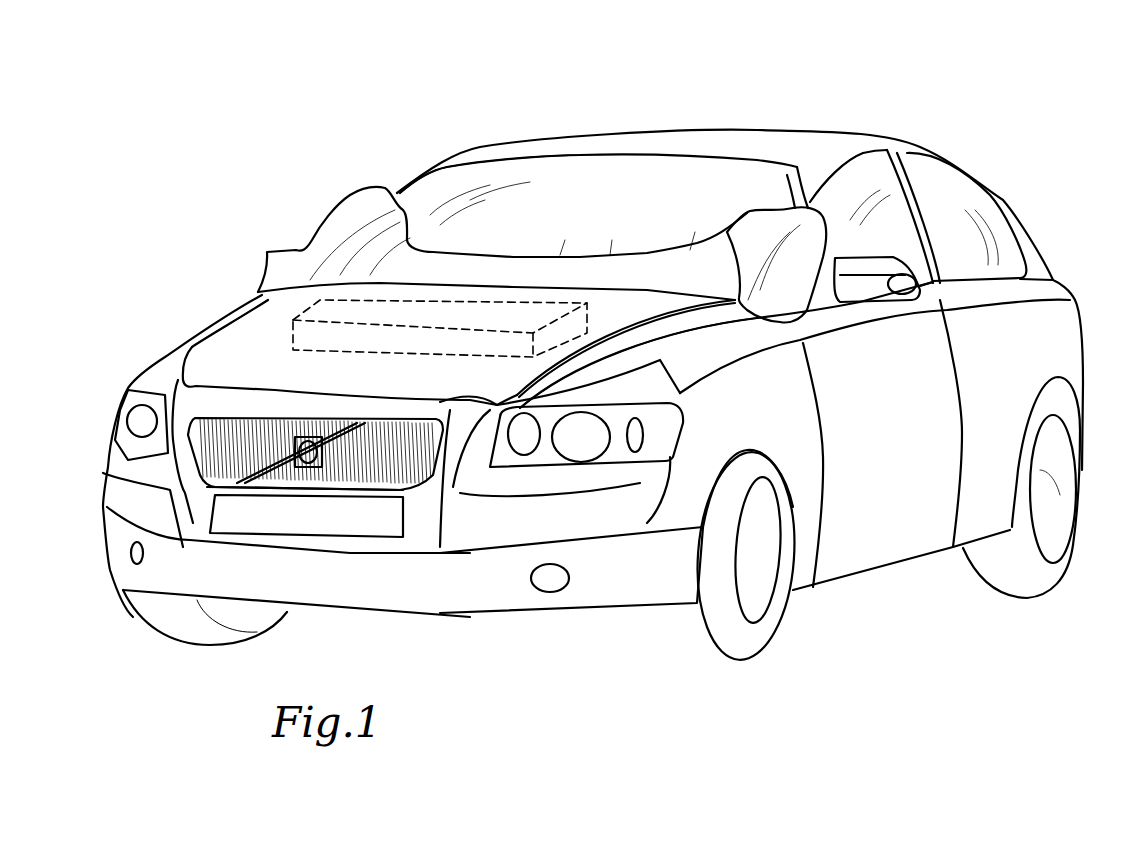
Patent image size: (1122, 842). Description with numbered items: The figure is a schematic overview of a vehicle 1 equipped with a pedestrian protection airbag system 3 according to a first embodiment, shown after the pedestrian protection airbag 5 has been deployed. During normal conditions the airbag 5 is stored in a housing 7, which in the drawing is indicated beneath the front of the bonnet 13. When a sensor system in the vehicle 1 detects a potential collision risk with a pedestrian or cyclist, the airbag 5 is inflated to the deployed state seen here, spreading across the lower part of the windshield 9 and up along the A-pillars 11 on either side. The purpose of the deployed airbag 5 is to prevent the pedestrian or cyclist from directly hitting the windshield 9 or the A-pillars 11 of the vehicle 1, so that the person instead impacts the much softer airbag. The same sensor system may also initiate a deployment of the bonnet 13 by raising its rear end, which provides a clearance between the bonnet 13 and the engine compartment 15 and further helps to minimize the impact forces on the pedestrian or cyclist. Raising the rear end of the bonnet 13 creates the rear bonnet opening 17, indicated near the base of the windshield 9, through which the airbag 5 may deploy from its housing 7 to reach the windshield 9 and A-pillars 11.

The vehicle 1 is at (860, 78).
The pedestrian protection airbag system 3 is at (391, 166).
The pedestrian protection airbag 5 is at (345, 222).
The housing 7 is at (332, 337).
The windshield 9 is at (518, 185).
The A-pillar 11 is at (805, 192).
The bonnet 13 is at (247, 318).
The engine compartment 15 is at (623, 340).
The rear bonnet opening 17 is at (735, 309).